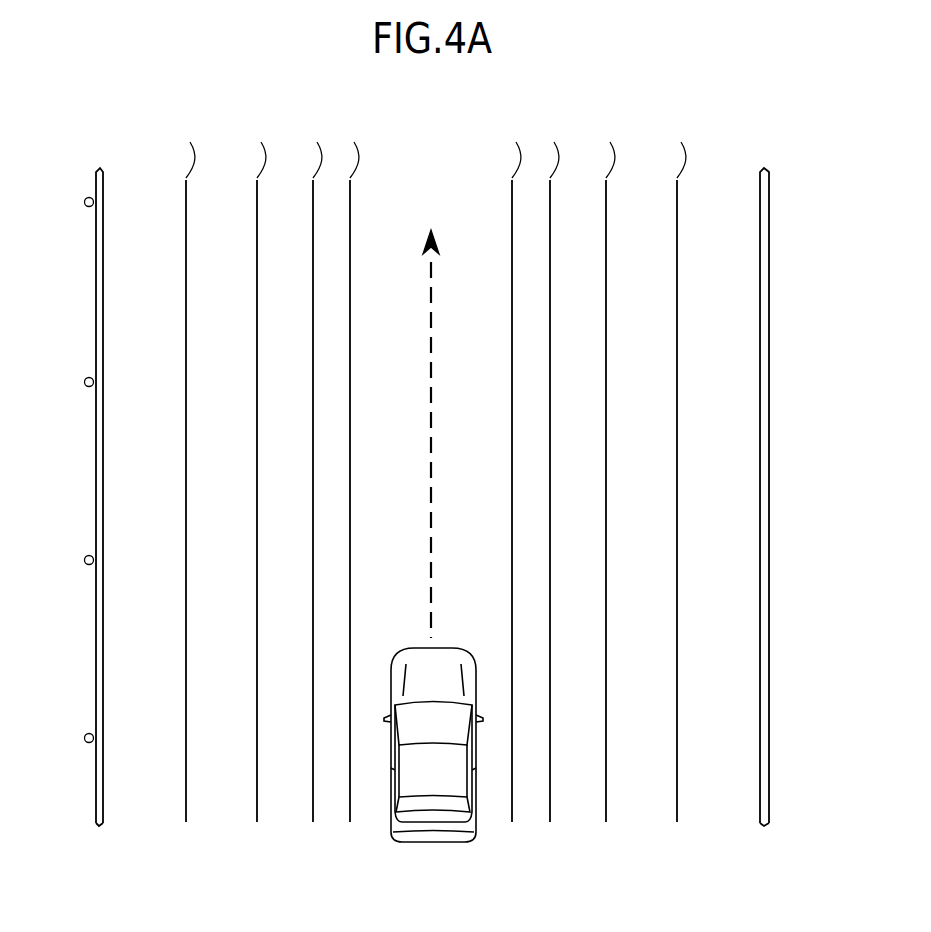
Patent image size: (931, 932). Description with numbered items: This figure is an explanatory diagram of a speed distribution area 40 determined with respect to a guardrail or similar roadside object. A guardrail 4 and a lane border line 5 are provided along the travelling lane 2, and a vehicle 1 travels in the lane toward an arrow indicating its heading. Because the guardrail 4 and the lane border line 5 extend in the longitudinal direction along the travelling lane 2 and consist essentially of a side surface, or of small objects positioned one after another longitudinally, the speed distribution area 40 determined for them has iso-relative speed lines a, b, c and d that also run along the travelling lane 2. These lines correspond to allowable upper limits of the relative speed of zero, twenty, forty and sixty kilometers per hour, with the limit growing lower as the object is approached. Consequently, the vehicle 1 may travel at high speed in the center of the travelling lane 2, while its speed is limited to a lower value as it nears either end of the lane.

The vehicle 1 is at (428, 845).
The travelling lane 2 is at (729, 238).
The guardrail 4 is at (95, 318).
The lane border line 5 is at (770, 394).
The speed distribution area 40 is at (351, 830).